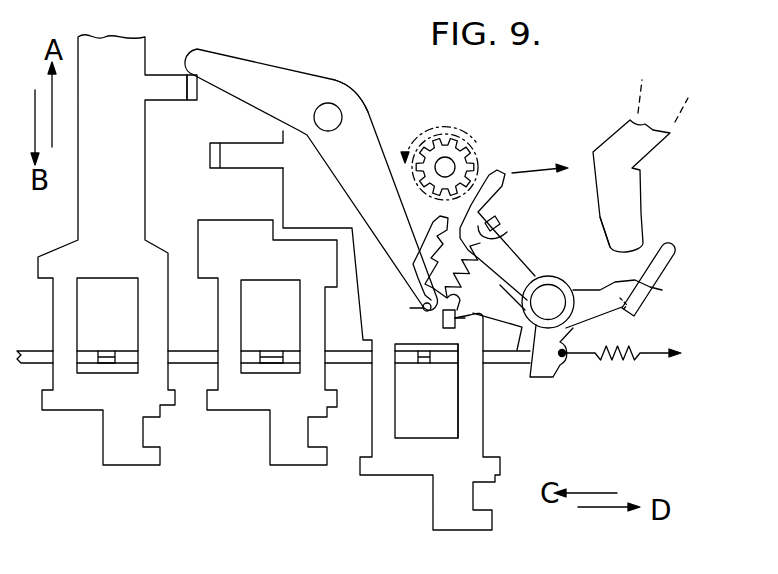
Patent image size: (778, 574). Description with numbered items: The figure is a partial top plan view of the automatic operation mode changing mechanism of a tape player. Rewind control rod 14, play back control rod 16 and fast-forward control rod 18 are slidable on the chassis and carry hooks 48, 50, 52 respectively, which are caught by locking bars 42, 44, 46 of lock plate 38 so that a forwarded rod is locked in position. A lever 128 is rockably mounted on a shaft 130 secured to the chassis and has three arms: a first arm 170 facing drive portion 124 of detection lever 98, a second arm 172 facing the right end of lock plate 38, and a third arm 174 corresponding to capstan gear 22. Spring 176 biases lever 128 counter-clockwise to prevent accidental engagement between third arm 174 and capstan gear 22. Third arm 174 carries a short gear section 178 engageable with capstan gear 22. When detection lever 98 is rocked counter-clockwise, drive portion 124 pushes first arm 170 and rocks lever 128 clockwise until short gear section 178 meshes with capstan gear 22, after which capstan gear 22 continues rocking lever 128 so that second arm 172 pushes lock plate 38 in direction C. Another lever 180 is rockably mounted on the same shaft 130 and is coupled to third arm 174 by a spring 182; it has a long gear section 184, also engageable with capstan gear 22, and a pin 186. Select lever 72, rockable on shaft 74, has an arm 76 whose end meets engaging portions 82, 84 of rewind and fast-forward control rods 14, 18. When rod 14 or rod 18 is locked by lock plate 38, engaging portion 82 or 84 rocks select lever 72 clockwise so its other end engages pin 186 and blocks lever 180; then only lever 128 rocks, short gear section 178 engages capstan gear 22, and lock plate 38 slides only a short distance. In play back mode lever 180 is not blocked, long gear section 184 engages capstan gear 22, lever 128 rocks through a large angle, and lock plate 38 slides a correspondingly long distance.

The rewind control rod 14 is at (70, 403).
The play back control rod 16 is at (243, 397).
The fast-forward control rod 18 is at (397, 465).
The capstan gear 22 is at (455, 137).
The lock plate 38 is at (507, 365).
The locking bar 42 is at (110, 362).
The locking bar 44 is at (274, 363).
The locking bar 46 is at (425, 355).
The hook 48 is at (133, 350).
The hook 50 is at (273, 343).
The hook 52 is at (450, 390).
The select lever 72 is at (313, 92).
The shaft 74 is at (330, 118).
The arm of select lever 76 is at (230, 73).
The engaging portion 82 is at (198, 90).
The engaging portion 84 is at (210, 152).
The detection lever 98 is at (625, 135).
The drive portion 124 is at (625, 217).
The lever 128 is at (663, 289).
The shaft 130 is at (552, 297).
The first arm 170 is at (667, 253).
The second arm 172 is at (543, 370).
The third arm 174 is at (495, 235).
The spring 176 is at (617, 363).
The short gear section 178 is at (496, 170).
The lever 180 is at (527, 363).
The spring 182 is at (480, 238).
The long gear section 184 is at (423, 240).
The pin 186 is at (410, 308).